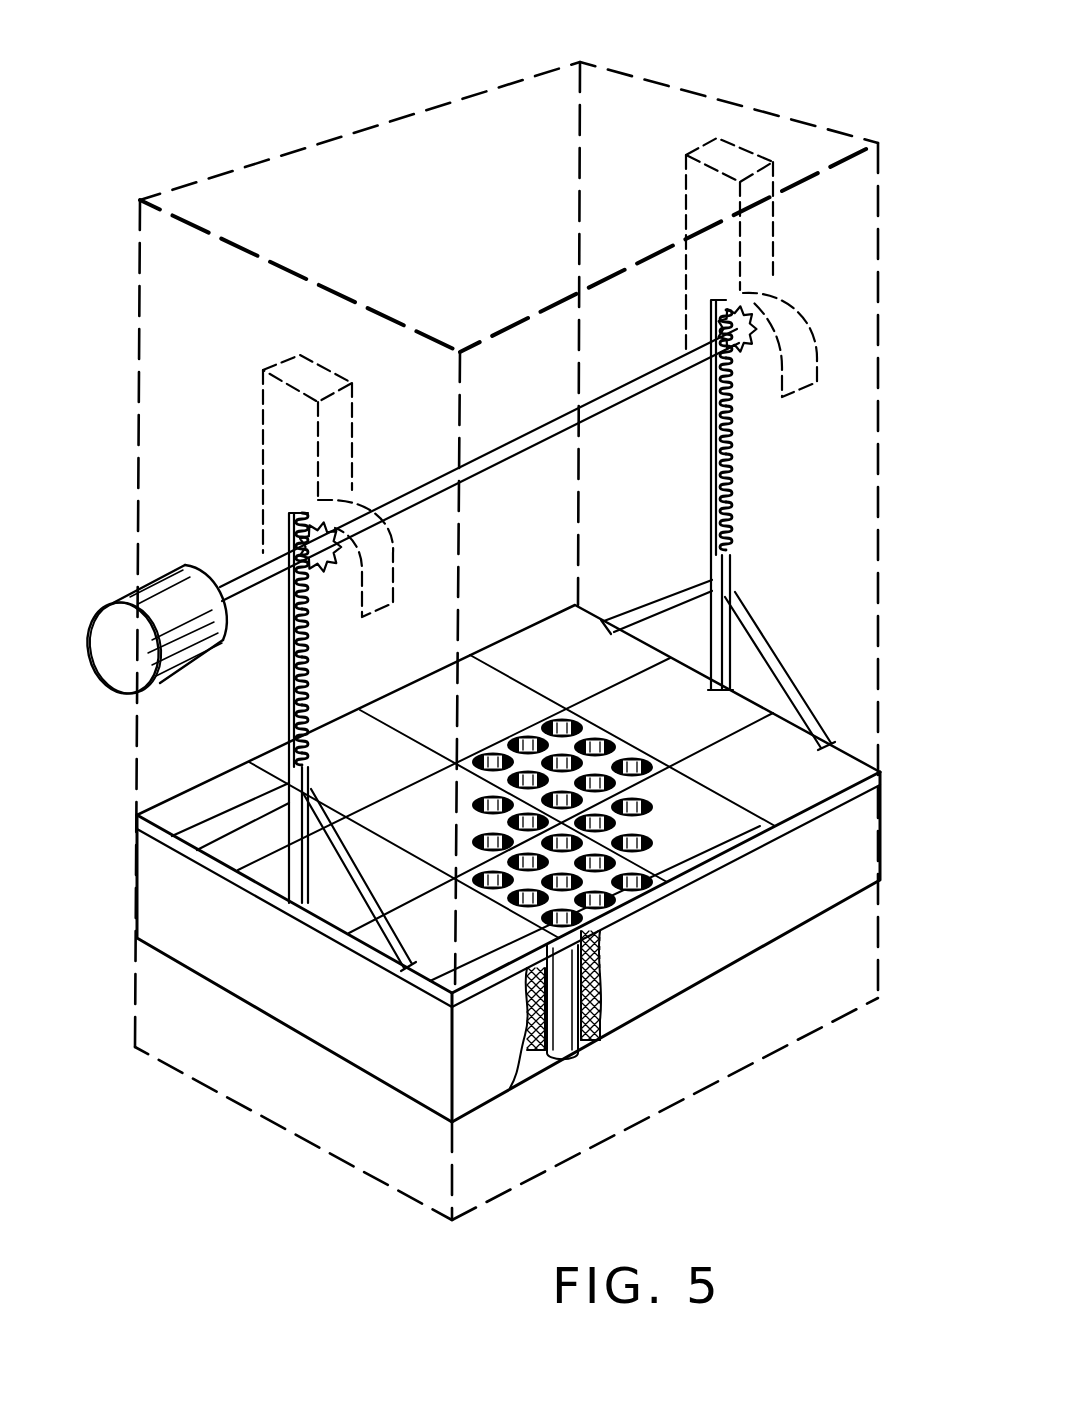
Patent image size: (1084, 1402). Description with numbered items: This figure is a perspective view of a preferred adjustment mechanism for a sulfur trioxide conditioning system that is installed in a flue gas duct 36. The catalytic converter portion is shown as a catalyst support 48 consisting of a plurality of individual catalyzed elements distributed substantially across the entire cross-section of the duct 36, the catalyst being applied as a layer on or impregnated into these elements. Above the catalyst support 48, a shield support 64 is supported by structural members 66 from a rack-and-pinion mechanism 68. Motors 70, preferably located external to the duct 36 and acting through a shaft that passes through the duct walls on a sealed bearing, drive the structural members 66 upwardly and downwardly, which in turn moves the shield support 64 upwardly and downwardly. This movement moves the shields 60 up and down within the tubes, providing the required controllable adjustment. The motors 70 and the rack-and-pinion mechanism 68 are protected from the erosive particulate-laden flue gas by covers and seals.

The duct 36 is at (365, 1163).
The catalyst support 48 is at (643, 1000).
The shields 60 is at (560, 1043).
The shield support 64 is at (697, 818).
The structural members 66 is at (757, 627).
The rack-and-pinion mechanism 68 is at (743, 387).
The motors 70 is at (123, 680).